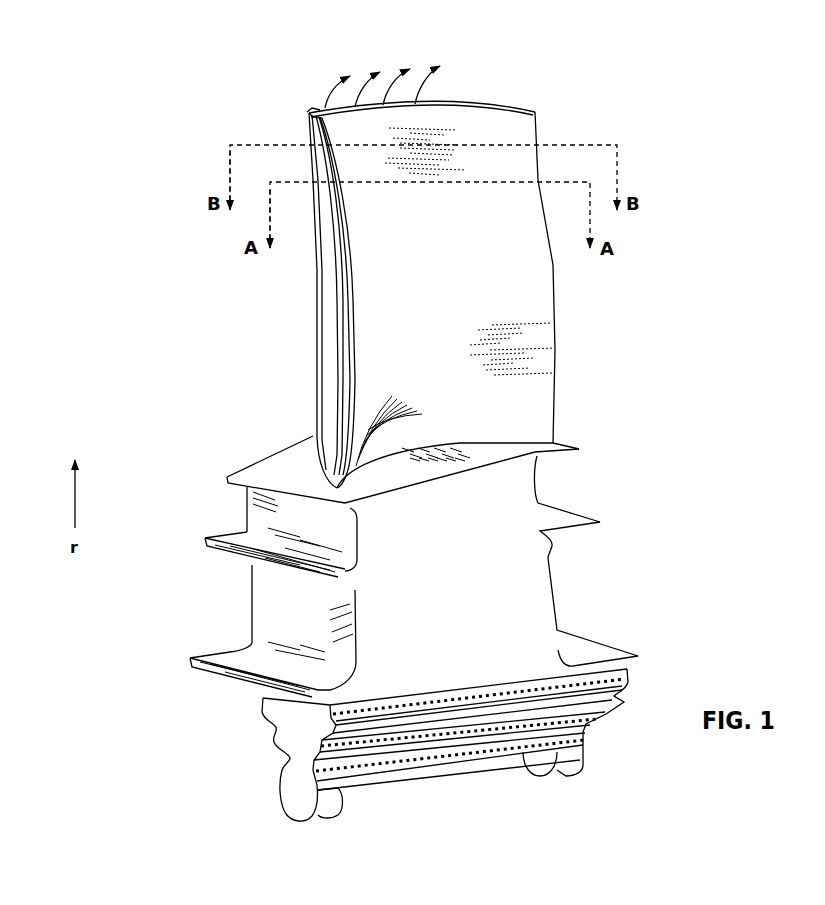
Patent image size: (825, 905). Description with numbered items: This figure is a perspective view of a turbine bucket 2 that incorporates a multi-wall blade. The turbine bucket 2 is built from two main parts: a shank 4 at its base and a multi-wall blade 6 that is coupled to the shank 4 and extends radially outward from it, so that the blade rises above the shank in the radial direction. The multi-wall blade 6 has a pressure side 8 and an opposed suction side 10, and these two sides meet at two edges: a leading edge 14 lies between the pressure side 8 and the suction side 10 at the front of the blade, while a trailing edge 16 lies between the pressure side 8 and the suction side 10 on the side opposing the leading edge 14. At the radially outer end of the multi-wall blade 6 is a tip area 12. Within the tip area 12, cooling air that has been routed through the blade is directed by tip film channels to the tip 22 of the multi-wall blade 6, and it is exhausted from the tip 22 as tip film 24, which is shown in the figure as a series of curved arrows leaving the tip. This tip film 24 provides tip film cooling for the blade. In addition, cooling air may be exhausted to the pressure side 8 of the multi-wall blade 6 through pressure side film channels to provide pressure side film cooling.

The turbine bucket 2 is at (202, 142).
The shank 4 is at (461, 573).
The multi-wall blade 6 is at (437, 330).
The pressure side 8 is at (523, 395).
The suction side 10 is at (343, 325).
The tip area 12 is at (528, 92).
The leading edge 14 is at (320, 408).
The trailing edge 16 is at (557, 313).
The tip 22 is at (313, 110).
The tip film 24 is at (322, 75).